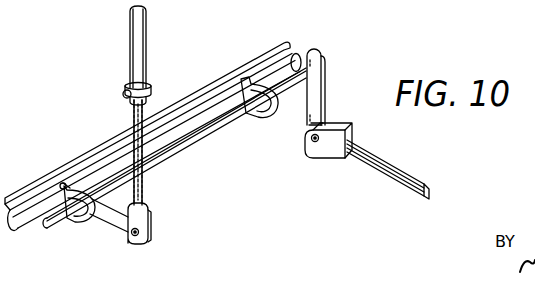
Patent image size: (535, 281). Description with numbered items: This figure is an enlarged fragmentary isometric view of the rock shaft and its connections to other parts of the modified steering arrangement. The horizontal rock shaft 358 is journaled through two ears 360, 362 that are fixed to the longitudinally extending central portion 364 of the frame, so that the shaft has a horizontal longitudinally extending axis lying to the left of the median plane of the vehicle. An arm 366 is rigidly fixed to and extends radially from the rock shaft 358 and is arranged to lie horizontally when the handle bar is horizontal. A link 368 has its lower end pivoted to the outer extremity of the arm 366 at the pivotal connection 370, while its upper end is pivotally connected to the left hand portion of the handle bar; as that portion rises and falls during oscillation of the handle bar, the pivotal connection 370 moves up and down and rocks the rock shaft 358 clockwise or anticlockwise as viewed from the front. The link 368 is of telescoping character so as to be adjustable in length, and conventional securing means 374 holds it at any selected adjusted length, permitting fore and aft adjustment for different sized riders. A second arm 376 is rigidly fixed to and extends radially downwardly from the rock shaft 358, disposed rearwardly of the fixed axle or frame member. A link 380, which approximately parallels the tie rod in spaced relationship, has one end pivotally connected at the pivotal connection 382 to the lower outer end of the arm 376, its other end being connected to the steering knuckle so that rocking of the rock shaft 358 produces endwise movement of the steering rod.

The rock shaft 358 is at (206, 134).
The ear 360 is at (70, 182).
The ear 362 is at (256, 76).
The longitudinally extending central portion 364 is at (205, 92).
The arm 366 is at (110, 218).
The link 368 is at (134, 50).
The pivotal connection 370 is at (139, 238).
The securing means 374 is at (124, 86).
The arm 376 is at (316, 92).
The link 380 is at (377, 165).
The pivotal connection 382 is at (311, 144).